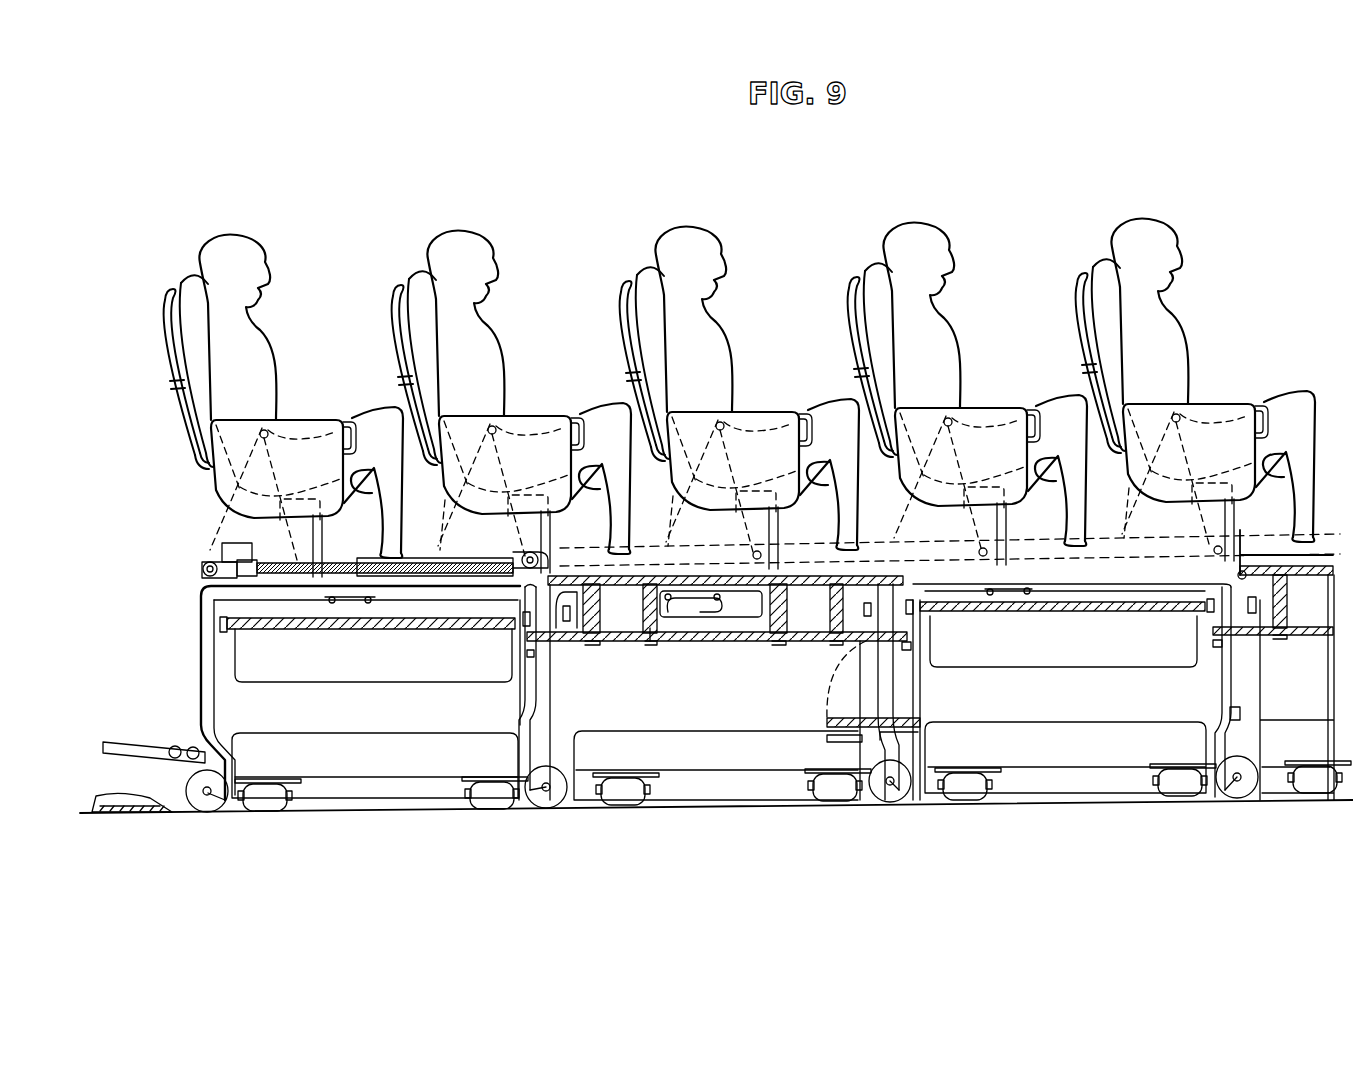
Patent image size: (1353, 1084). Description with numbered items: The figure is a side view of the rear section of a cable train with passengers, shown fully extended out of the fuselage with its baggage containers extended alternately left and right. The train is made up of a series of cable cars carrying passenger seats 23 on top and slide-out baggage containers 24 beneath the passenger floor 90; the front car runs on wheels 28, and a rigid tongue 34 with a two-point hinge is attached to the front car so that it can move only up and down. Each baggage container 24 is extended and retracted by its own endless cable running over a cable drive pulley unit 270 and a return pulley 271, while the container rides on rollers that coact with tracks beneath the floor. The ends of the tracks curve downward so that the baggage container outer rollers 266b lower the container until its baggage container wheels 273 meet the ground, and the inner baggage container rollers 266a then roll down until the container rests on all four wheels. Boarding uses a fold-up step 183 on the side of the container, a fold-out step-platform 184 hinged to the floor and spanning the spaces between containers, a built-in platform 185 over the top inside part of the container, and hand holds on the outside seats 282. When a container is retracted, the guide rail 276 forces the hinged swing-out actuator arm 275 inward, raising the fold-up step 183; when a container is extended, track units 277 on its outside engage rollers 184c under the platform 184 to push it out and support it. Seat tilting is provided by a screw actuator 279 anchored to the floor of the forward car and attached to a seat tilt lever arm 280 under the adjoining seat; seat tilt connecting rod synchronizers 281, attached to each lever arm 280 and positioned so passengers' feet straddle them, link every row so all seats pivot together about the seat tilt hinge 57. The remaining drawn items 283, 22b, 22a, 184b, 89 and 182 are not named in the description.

The passenger seats 23 is at (188, 275).
The hand holds on the outside seats 282 is at (395, 335).
The seat tilt hinge 57 is at (268, 432).
The seat swing path 283 is at (450, 523).
The seat tilt lever arm 280 is at (320, 518).
The seat tilt connecting rod synchronizers 281 is at (590, 542).
The passenger floor 90 is at (598, 600).
The screw actuator 279 is at (221, 551).
The wheels 28 is at (198, 592).
The return pulley 271 is at (330, 601).
The built-in platform 185 is at (390, 632).
The slide-out baggage container 24 is at (388, 718).
The baggage container outer rollers 266b is at (228, 632).
The inner baggage container rollers 266a is at (562, 614).
The cross beam 22b is at (812, 576).
The post 22a is at (1110, 600).
The fold-out step-platform 184 is at (720, 642).
The cross member leg 184b is at (672, 642).
The rollers 184c is at (532, 650).
The track units 277 is at (526, 654).
The cable drive pulley unit 270 is at (735, 612).
The baggage container wheels 273 is at (272, 792).
The wheel 89 is at (200, 788).
The rigid tongue 34 is at (138, 742).
The foot plate 182 is at (115, 796).
The fold-up step 183 is at (826, 716).
The guide rail 276 is at (893, 718).
The hinged swing-out actuator arm 275 is at (830, 742).